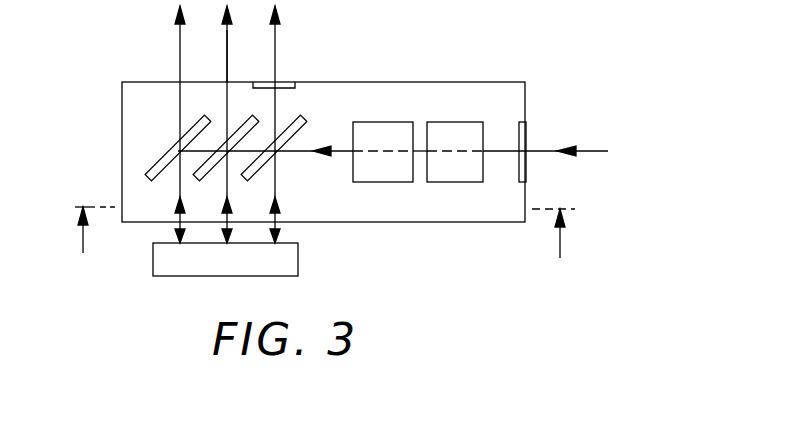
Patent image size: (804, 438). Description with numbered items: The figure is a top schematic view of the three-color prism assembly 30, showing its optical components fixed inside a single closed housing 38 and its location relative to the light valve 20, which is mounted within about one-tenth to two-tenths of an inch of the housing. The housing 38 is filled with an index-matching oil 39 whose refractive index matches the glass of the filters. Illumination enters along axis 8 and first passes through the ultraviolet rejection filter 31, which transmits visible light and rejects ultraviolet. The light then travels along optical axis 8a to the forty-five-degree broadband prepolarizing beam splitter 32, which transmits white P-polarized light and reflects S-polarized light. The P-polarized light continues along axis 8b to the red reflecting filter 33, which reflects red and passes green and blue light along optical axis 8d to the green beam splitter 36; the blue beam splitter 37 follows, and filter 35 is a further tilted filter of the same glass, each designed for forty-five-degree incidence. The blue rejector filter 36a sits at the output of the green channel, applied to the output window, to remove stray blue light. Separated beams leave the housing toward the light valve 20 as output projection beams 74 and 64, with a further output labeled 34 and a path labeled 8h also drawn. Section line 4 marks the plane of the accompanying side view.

The prism assembly 30 is at (94, 179).
The housing 38 is at (122, 103).
The blue rejector filter 36a is at (290, 84).
The blue beam splitter 37 is at (161, 165).
The filter 35 is at (246, 123).
The green beam splitter 36 is at (293, 120).
The red reflecting filter 33 is at (392, 122).
The prepolarizing beam splitter 32 is at (470, 122).
The ultraviolet rejection filter 31 is at (525, 130).
The axis 8 is at (580, 152).
The optical axis 8a is at (497, 154).
The axis 8b is at (413, 154).
The optical axis 8d is at (333, 152).
The light beam segment 8h is at (227, 65).
The index-matching oil 39 is at (356, 216).
The output projection beam 74 is at (180, 42).
The output beam 34 is at (227, 30).
The output projection beam 64 is at (275, 35).
The light valve 20 is at (153, 258).
The section line 4- 4 is at (310, 252).